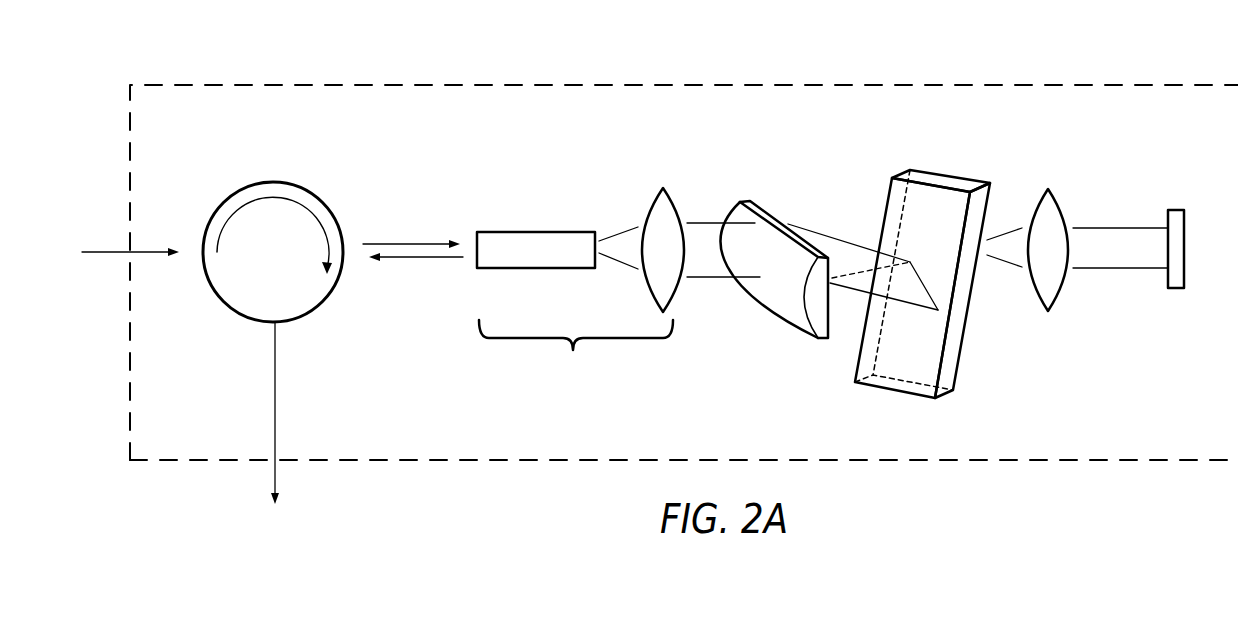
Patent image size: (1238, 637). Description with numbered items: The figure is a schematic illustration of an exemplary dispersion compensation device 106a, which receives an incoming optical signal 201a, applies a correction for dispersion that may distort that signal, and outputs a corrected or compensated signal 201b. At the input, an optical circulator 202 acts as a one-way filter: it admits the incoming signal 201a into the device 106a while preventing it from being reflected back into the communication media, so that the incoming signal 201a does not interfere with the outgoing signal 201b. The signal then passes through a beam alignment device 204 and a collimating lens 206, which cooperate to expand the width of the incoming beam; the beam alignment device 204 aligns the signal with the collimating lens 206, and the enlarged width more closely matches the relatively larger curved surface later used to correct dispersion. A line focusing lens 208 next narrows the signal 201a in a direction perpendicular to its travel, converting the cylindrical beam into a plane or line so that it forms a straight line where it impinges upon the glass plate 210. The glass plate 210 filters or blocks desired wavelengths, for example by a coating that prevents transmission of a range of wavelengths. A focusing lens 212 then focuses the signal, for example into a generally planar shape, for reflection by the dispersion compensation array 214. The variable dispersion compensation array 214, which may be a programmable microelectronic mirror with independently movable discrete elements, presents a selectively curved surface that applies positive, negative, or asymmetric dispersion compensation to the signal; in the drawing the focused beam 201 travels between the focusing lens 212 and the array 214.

The dispersion compensation device 106a is at (190, 85).
The incoming optical signal 201a is at (102, 251).
The corrected or compensated signal 201b is at (445, 258).
The focused light beam 201 is at (1108, 246).
The optical circulator 202 is at (323, 202).
The beam alignment device 204 is at (545, 231).
The collimating lens 206 is at (651, 209).
The line focusing lens 208 is at (778, 313).
The glass plate 210 is at (922, 173).
The focusing lens 212 is at (1035, 210).
The dispersion compensation array 214 is at (1180, 209).